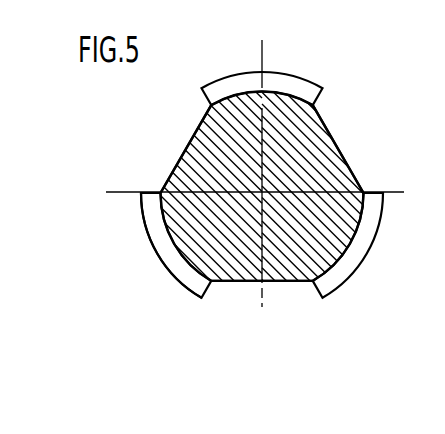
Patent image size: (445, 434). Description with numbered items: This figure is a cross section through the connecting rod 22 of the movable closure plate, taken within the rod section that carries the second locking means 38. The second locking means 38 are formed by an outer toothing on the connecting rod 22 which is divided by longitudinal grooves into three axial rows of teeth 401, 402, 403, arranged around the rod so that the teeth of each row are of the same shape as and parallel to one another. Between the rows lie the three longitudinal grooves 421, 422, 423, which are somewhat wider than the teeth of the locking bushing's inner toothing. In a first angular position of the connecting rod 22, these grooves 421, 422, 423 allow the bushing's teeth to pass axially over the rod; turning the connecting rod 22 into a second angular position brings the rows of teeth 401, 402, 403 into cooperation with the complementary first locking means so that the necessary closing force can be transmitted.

The connecting rod 22 is at (212, 133).
The second locking means 38 is at (179, 285).
The first axial row of teeth 401 is at (295, 75).
The second axial row of teeth 402 is at (364, 261).
The third axial row of teeth 403 is at (146, 233).
The first longitudinal groove 421 is at (327, 127).
The second longitudinal groove 422 is at (226, 284).
The third longitudinal groove 423 is at (181, 152).